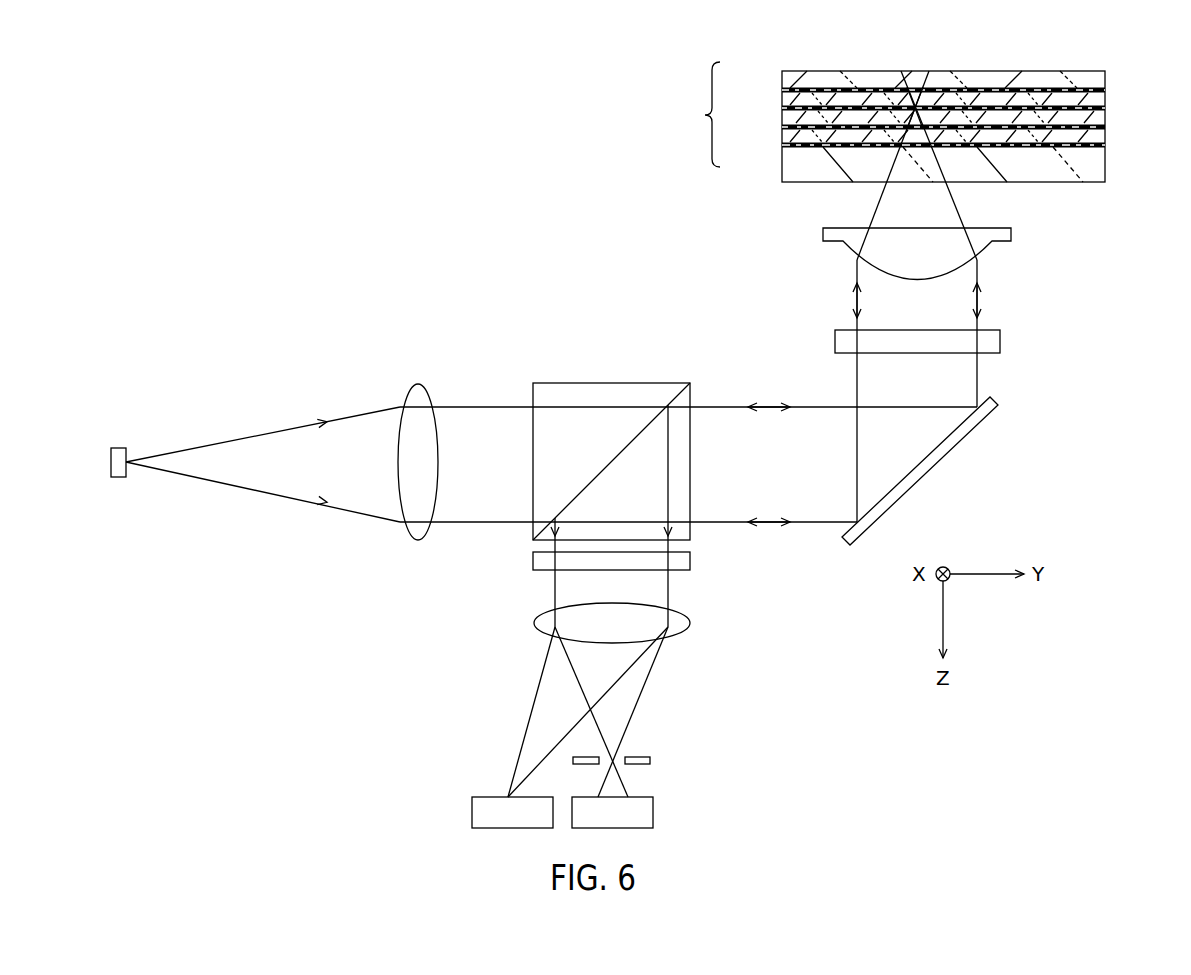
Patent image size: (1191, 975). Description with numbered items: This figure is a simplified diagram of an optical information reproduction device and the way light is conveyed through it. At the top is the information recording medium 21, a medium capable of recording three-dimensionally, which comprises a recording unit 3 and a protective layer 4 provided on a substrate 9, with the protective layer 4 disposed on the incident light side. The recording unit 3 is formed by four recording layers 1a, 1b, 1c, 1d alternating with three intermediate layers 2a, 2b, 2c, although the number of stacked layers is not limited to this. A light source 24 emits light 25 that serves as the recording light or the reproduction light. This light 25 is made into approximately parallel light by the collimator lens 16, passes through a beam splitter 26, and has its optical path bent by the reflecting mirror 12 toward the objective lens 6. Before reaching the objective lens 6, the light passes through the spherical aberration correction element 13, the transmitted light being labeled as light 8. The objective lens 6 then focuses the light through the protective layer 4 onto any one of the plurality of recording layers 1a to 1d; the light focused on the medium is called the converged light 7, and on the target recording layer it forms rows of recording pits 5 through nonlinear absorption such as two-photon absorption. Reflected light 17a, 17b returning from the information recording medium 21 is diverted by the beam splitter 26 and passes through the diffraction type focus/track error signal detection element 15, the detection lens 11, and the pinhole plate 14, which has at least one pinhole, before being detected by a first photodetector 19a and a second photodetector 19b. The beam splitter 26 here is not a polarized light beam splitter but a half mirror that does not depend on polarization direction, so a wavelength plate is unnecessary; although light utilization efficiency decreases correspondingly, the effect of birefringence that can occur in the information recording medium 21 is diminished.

The recording layer 1a is at (782, 89).
The recording layer 1b is at (782, 108).
The recording layer 1c is at (782, 127).
The recording layer 1d is at (782, 145).
The intermediate layer 2a is at (1105, 98).
The intermediate layer 2b is at (1105, 117).
The intermediate layer 2c is at (1105, 136).
The recording unit 3 is at (704, 114).
The protective layer 4 is at (787, 165).
The recording pit 5 is at (915, 108).
The objective lens 6 is at (843, 247).
The converged light 7 is at (878, 210).
The light 8 is at (980, 299).
The substrate 9 is at (788, 73).
The detection lens 11 is at (690, 623).
The reflecting mirror 12 is at (927, 472).
The spherical aberration correction element 13 is at (1000, 340).
The pinhole plate 14 is at (652, 760).
The diffraction type focus/track error signal detection element 15 is at (690, 560).
The collimator lens 16 is at (420, 386).
The reflected light 17a is at (638, 687).
The reflected light 17b is at (543, 703).
The first photodetector 19a is at (653, 815).
The second photodetector 19b is at (472, 815).
The information recording medium 21 is at (1092, 67).
The light source 24 is at (111, 462).
The light 25 is at (165, 460).
The beam splitter 26 is at (605, 420).